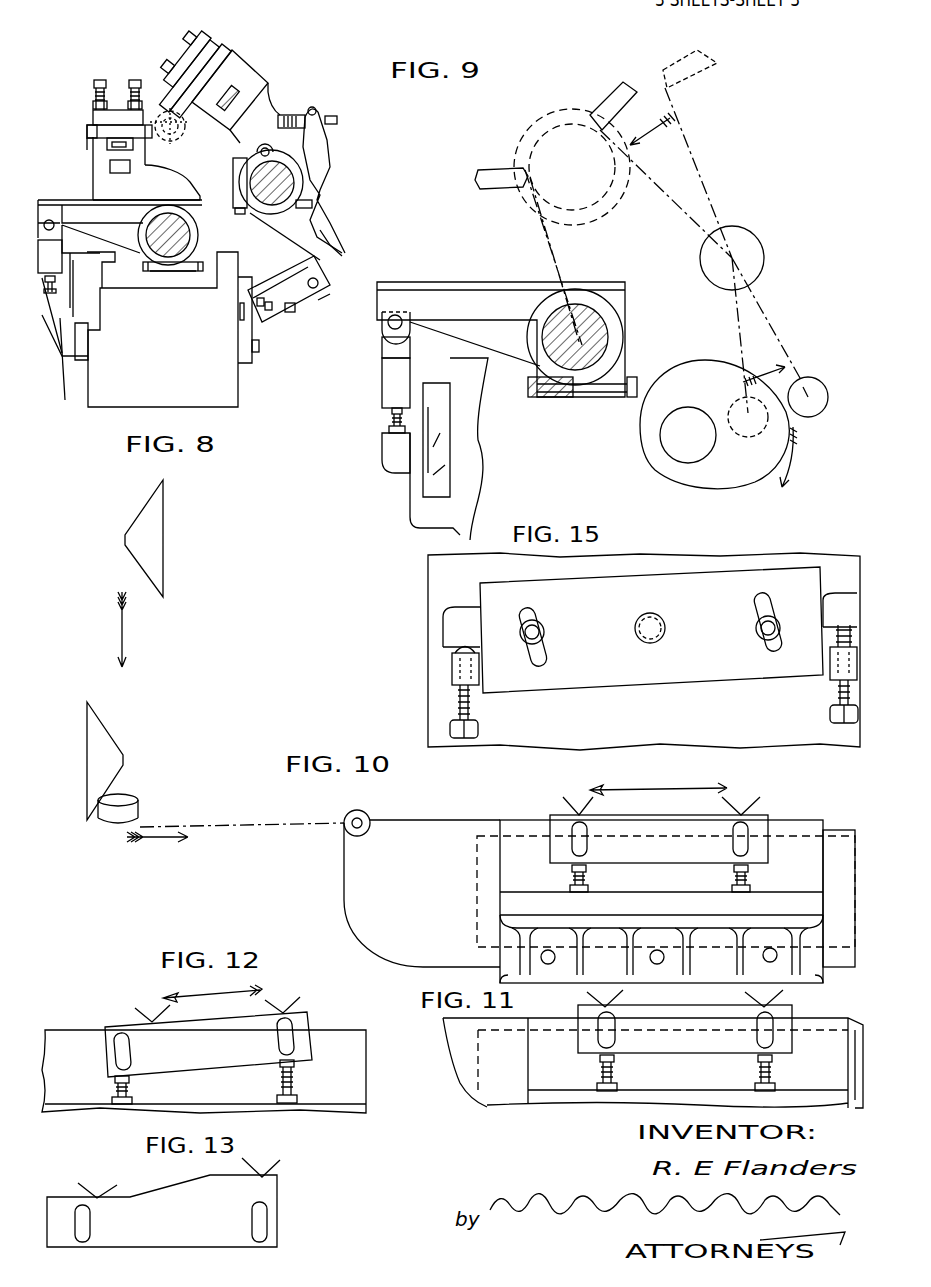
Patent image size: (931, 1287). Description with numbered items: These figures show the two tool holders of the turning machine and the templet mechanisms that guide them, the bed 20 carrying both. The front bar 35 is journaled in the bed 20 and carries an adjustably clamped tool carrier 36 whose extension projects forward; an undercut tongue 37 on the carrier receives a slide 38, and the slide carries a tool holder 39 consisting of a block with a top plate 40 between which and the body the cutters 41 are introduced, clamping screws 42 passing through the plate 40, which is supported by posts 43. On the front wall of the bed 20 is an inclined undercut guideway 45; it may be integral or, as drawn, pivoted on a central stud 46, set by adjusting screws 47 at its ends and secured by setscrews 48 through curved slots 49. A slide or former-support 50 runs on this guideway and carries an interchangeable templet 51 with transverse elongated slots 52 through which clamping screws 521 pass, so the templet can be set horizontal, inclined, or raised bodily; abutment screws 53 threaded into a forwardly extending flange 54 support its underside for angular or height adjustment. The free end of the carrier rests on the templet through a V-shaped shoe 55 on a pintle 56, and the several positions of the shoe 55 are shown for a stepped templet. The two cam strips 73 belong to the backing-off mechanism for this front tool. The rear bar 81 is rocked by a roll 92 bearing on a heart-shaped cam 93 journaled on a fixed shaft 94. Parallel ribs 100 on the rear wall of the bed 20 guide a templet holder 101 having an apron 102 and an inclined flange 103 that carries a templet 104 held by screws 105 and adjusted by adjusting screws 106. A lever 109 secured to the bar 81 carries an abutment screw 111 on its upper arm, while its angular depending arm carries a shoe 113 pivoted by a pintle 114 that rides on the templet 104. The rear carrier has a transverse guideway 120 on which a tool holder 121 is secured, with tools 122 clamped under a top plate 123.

In FIG. 8, the frame 20 is at (169, 329).
In FIG. 9, the frame 20 is at (470, 448).
In FIG. 15, the frame 20 is at (697, 745).
In FIG. 8, the bar 35 is at (165, 262).
In FIG. 9, the bar 35 is at (572, 375).
In FIG. 8, the tool carrier 36 is at (82, 204).
In FIG. 9, the tool carrier 36 is at (492, 290).
In FIG. 8, the undercut tongue or guideway 37 is at (52, 204).
In FIG. 9, the undercut tongue or guideway 37 is at (445, 282).
In FIG. 8, the slide 38 is at (168, 184).
In FIG. 8, the tool holder 39 is at (93, 142).
In FIG. 8, the top plate 40 is at (116, 108).
In FIG. 8, the cutters 41 is at (90, 128).
In FIG. 9, the cutters 41 is at (485, 168).
In FIG. 8, the clamping screws 42 is at (96, 80).
In FIG. 8, the posts 43 is at (135, 150).
In FIG. 8, the inclined undercut guideway or tongue 45 is at (65, 345).
In FIG. 9, the inclined undercut guideway or tongue 45 is at (428, 470).
In FIG. 15, the inclined undercut guideway or tongue 45 is at (650, 580).
In FIG. 10, the inclined undercut guideway or tongue 45 is at (470, 925).
In FIG. 15, the stud 46 is at (658, 650).
In FIG. 15, the adjusting screws 47 is at (452, 702).
In FIG. 15, the setscrews 48 is at (795, 540).
In FIG. 15, the curved slots 49 is at (532, 695).
In FIG. 8, the slide or former-support 50 is at (58, 380).
In FIG. 10, the slide or former-support 50 is at (346, 905).
In FIG. 11, the slide or former-support 50 is at (505, 1100).
In FIG. 8, the templet or former 51 is at (101, 239).
In FIG. 9, the templet or former 51 is at (385, 385).
In FIG. 10, the templet or former 51 is at (660, 825).
In FIG. 12, the templet or former 51 is at (215, 1028).
In FIG. 11, the templet or former 51 is at (705, 1015).
In FIG. 10, the transverse elongated slots 52 is at (587, 845).
In FIG. 12, the transverse elongated slots 52 is at (132, 1046).
In FIG. 13, the transverse elongated slots 52 is at (90, 1222).
In FIG. 11, the transverse elongated slots 52 is at (610, 1028).
In FIG. 8, the abutment screws 53 is at (58, 290).
In FIG. 9, the abutment screws 53 is at (389, 428).
In FIG. 10, the abutment screws 53 is at (588, 880).
In FIG. 12, the abutment screws 53 is at (132, 1090).
In FIG. 11, the abutment screws 53 is at (617, 1075).
In FIG. 8, the flange 54 is at (44, 330).
In FIG. 9, the flange 54 is at (382, 455).
In FIG. 10, the flange 54 is at (572, 915).
In FIG. 12, the flange 54 is at (88, 1105).
In FIG. 11, the flange 54 is at (584, 1095).
In FIG. 8, the V-shaped shoe 55 is at (58, 248).
In FIG. 9, the V-shaped shoe 55 is at (384, 350).
In FIG. 10, the V-shaped shoe 55 is at (664, 792).
In FIG. 12, the V-shaped shoe 55 is at (217, 997).
In FIG. 13, the V-shaped shoe 55 is at (179, 1168).
In FIG. 9, the pivot or pintle 56 is at (386, 323).
In FIG. 10, the cam strips 73 is at (137, 661).
In FIG. 8, the bar 81 is at (331, 152).
In FIG. 9, the bar 81 is at (750, 250).
In FIG. 9, the roll 92 is at (818, 390).
In FIG. 9, the heart-shaped cam 93 is at (693, 360).
In FIG. 9, the fixed shaft 94 is at (678, 438).
In FIG. 8, the parallel ribs 100 is at (245, 282).
In FIG. 8, the templet holder 101 is at (238, 320).
In FIG. 8, the apron 102 is at (272, 260).
In FIG. 8, the flange 103 is at (262, 306).
In FIG. 8, the templet 104 is at (322, 262).
In FIG. 8, the screws 105 is at (296, 306).
In FIG. 8, the adjusting screws 106 is at (268, 312).
In FIG. 8, the lever 109 is at (330, 167).
In FIG. 8, the abutment screw 111 is at (332, 116).
In FIG. 8, the shoe 113 is at (325, 240).
In FIG. 8, the pintle 114 is at (332, 290).
In FIG. 8, the transverse guideway 120 is at (240, 88).
In FIG. 8, the tool holder 121 is at (236, 66).
In FIG. 8, the tools 122 is at (235, 40).
In FIG. 9, the tools 122 is at (616, 85).
In FIG. 8, the top plate 123 is at (207, 36).
In FIG. 8, the clamping screws 521 is at (75, 300).